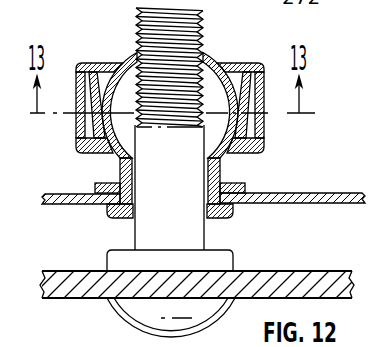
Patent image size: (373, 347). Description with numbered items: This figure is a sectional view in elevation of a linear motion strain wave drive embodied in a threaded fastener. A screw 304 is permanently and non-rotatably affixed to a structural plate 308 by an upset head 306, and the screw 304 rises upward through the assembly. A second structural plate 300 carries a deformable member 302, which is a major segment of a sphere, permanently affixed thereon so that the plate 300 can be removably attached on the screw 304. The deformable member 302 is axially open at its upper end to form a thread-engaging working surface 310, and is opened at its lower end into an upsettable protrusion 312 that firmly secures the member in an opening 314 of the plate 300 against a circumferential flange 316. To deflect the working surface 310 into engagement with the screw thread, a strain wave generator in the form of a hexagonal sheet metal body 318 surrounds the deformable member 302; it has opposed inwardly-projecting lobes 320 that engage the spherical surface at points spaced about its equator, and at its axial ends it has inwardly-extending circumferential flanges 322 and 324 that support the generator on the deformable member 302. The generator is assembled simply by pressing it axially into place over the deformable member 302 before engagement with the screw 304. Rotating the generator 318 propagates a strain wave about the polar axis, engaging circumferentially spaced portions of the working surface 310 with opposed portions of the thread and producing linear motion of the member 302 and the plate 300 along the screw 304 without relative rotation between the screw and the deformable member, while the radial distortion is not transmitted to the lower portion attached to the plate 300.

The plate 300 is at (303, 193).
The deformable member 302 is at (223, 154).
The screw 304 is at (196, 231).
The upset head 306 is at (133, 315).
The plate 308 is at (289, 272).
The thread-engaging working surface 310 is at (147, 51).
The upsettable protrusion 312 is at (110, 216).
The opening 314 is at (120, 173).
The circumferential flange 316 is at (97, 188).
The hexagonal sheet metal body 318 is at (265, 124).
The inwardly-projecting lobes 320 is at (79, 121).
The circumferential flange 322 is at (93, 149).
The circumferential flange 324 is at (97, 63).